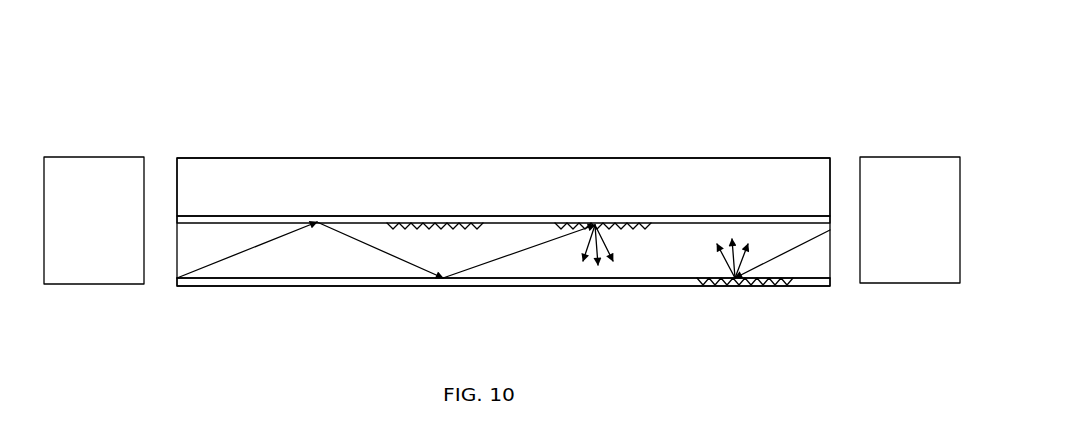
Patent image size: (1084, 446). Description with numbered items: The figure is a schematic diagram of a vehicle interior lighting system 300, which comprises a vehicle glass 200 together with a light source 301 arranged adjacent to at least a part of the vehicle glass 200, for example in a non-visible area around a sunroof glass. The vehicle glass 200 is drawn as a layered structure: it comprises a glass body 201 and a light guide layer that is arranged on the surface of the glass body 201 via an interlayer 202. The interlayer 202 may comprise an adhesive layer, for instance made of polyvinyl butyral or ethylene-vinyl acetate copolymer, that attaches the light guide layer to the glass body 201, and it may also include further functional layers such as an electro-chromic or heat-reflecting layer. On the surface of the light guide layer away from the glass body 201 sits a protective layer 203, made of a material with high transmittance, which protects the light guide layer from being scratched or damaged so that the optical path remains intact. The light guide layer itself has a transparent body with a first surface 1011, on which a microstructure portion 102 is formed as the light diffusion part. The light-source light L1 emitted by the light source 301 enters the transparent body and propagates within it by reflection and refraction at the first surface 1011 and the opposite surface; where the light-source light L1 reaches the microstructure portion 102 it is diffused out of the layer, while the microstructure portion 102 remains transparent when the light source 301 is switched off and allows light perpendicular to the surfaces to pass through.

The vehicle interior lighting system 300 is at (432, 54).
The vehicle glass 200 is at (522, 157).
The glass body 201 is at (320, 185).
The interlayer 202 is at (183, 218).
The protective layer 203 is at (402, 283).
The first surface 1011 is at (333, 278).
The microstructure portion 102 is at (467, 226).
The light-source light L1 is at (217, 263).
The light source 301 is at (123, 172).